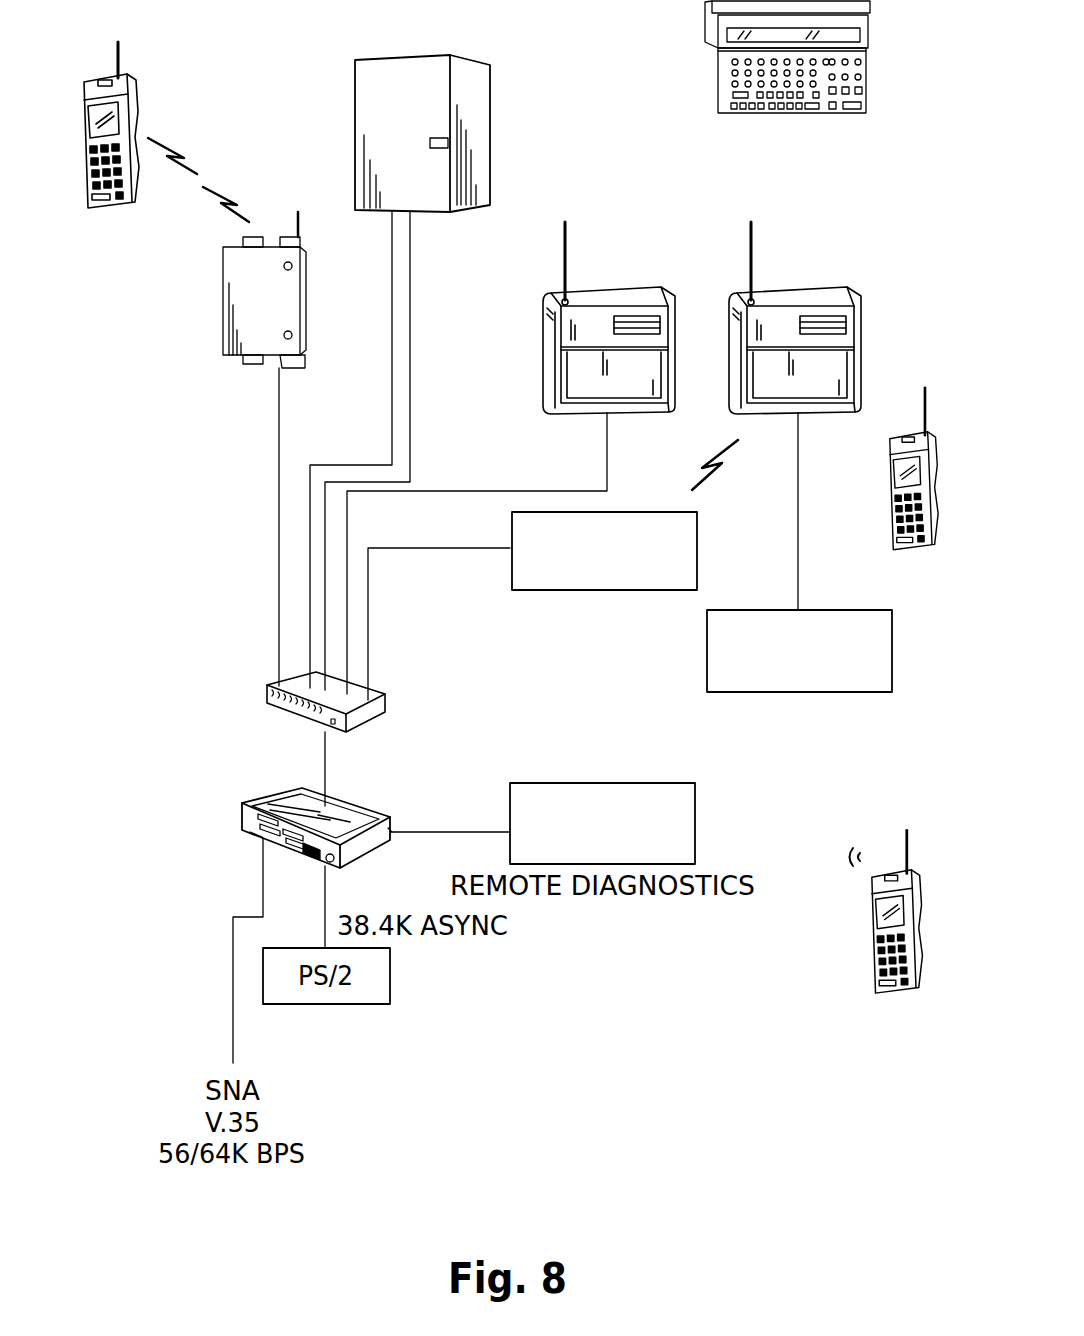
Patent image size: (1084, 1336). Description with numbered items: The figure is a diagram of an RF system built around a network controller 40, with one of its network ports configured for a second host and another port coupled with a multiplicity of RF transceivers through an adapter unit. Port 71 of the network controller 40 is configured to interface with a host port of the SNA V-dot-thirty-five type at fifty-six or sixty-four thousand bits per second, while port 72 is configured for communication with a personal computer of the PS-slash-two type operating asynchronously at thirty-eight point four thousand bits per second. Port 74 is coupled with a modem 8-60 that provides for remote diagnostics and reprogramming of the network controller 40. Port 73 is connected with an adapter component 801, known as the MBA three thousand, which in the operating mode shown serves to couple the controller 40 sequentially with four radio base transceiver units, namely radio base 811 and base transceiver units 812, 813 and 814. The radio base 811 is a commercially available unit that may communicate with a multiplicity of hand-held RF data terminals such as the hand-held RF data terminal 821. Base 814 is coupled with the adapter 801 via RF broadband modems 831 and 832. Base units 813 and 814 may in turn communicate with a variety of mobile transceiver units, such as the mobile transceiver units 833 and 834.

The network controller 40 is at (296, 826).
The port 71 is at (262, 843).
The port 72 is at (325, 865).
The port 73 is at (325, 806).
The port 74 is at (390, 830).
The modem 8-60 is at (585, 783).
The adapter component 801 is at (277, 684).
The radio base 811 is at (228, 355).
The base transceiver unit 812 is at (490, 155).
The base transceiver unit 813 is at (610, 292).
The base transceiver unit 814 is at (796, 292).
The hand-held RF data terminal 821 is at (140, 113).
The RF broadband modem 831 is at (697, 578).
The RF broadband modem 832 is at (840, 610).
The mobile transceiver unit 833 is at (760, 114).
The mobile transceiver unit 834 is at (868, 945).